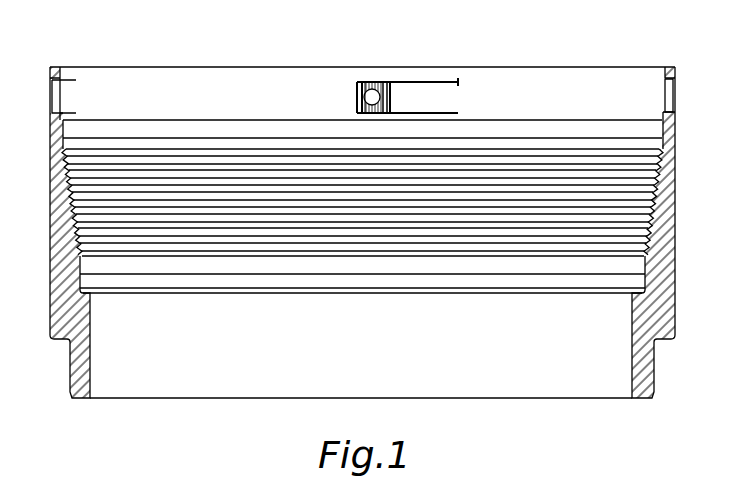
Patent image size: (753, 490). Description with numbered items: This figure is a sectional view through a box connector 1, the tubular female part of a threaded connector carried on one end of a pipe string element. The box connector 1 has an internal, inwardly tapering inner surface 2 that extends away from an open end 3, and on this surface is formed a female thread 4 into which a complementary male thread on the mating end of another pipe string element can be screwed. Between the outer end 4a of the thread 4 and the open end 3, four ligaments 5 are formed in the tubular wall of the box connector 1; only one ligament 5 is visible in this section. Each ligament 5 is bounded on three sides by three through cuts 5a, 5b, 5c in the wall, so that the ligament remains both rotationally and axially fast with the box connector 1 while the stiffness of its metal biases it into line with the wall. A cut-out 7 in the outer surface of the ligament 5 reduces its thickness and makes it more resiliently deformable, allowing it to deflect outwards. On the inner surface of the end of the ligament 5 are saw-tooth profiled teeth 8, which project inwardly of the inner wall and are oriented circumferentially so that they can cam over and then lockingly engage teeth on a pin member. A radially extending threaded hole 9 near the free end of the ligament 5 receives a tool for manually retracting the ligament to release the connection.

The box connector 1 is at (58, 308).
The inner surface 2 is at (656, 180).
The open end 3 is at (55, 70).
The female thread 4 is at (365, 226).
The outer end of the thread 4a is at (63, 150).
The ligament 5 is at (437, 96).
The through cut 5a is at (459, 82).
The through cut 5b is at (357, 100).
The through cut 5c is at (396, 111).
The cut-out 7 is at (677, 93).
The saw-tooth profiled teeth 8 is at (383, 83).
The threaded hole 9 is at (367, 84).